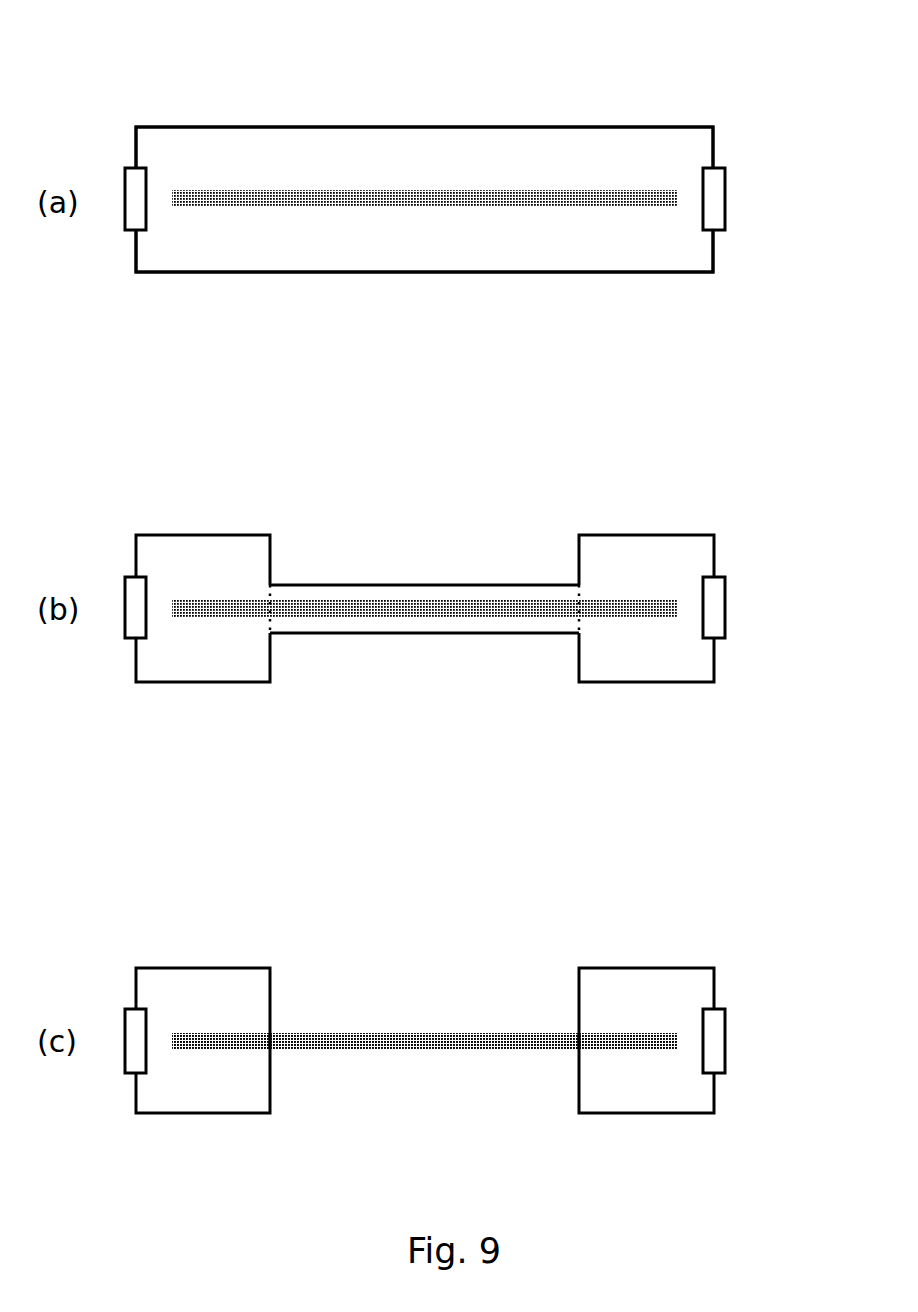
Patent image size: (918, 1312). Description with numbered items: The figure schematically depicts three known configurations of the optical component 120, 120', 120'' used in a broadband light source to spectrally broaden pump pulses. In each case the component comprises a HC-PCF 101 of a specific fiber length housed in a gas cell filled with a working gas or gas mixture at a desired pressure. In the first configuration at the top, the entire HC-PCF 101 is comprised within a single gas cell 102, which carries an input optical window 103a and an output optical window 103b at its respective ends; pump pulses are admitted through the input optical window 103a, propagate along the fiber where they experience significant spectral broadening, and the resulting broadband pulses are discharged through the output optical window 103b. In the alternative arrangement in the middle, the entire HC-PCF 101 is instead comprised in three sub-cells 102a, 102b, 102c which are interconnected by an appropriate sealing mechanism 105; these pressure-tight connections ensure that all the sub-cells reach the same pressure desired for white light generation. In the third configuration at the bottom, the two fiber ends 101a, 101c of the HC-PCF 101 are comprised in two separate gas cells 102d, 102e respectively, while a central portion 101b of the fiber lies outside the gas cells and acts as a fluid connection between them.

The optical component 120 is at (424, 142).
The optical component 120' is at (526, 436).
The optical component 120'' is at (528, 849).
The HC-PCF 101 is at (430, 200).
The fiber end 101a is at (218, 1035).
The central portion of the fiber 101b is at (385, 1033).
The fiber end 101c is at (628, 1033).
The gas cell 102 is at (565, 127).
The sub-cell 102a is at (203, 535).
The sub-cell 102b is at (373, 585).
The sub-cell 102c is at (670, 535).
The gas cell 102d is at (203, 968).
The gas cell 102e is at (645, 968).
The input optical window 103a is at (135, 185).
The output optical window 103b is at (713, 205).
The sealing mechanism 105 is at (271, 598).